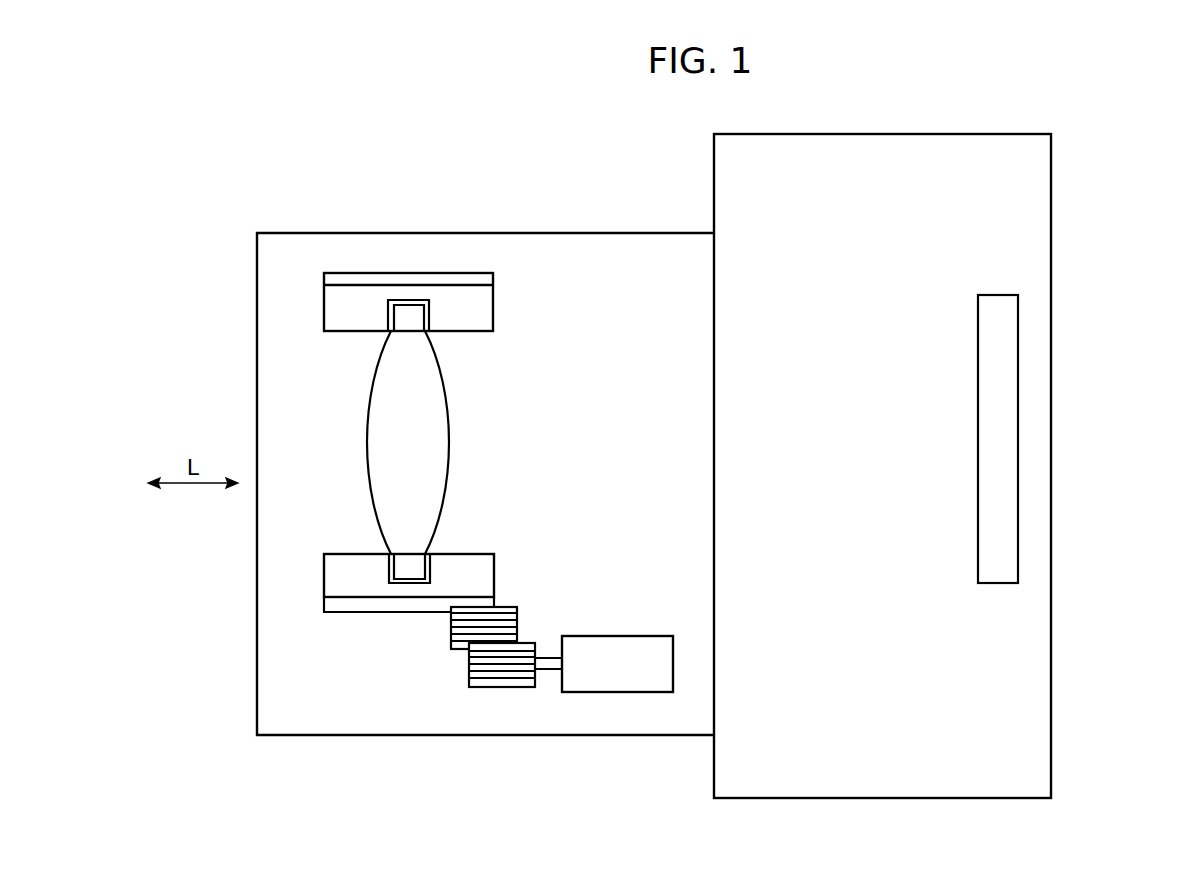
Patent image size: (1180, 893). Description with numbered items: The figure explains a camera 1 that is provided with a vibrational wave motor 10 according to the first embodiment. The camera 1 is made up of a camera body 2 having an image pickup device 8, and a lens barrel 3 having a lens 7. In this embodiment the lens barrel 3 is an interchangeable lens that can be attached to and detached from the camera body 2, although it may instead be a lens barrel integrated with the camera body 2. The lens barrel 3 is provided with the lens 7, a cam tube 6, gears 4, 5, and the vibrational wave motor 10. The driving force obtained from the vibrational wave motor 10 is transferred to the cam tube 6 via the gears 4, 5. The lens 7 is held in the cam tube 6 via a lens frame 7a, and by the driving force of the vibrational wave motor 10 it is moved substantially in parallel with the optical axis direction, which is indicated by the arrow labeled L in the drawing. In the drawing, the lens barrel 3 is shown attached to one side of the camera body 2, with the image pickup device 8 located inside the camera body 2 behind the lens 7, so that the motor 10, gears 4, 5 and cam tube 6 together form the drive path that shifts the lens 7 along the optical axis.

The camera 1 is at (1102, 150).
The camera body 2 is at (913, 783).
The lens barrel 3 is at (627, 253).
The gear 4 is at (513, 674).
The gear 5 is at (463, 637).
The cam tube 6 is at (356, 598).
The lens 7 is at (437, 444).
The lens frame 7a is at (410, 315).
The image pickup device 8 is at (987, 423).
The vibrational wave motor 10 is at (610, 650).